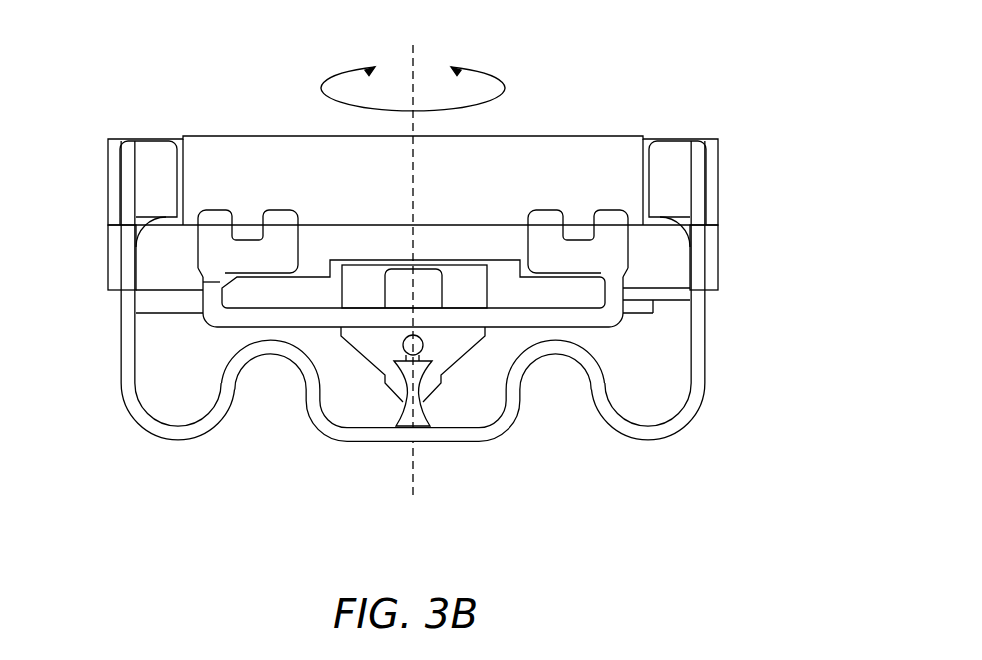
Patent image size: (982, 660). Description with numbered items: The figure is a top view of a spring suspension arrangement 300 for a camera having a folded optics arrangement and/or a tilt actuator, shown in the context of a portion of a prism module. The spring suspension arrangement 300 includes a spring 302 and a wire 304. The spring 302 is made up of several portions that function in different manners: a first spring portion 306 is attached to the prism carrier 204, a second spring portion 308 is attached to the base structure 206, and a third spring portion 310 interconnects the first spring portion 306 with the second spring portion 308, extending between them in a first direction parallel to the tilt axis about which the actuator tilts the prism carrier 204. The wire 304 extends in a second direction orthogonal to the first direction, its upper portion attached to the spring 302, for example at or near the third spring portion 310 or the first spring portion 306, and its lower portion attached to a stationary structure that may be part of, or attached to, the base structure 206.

The spring suspension arrangement 300 is at (119, 82).
The base structure 206 is at (719, 176).
The prism carrier 204 is at (716, 256).
The spring 302 is at (723, 379).
The wire 304 is at (424, 350).
The first spring portion 306 is at (229, 316).
The second spring portion 308 is at (126, 315).
The third spring portion 310 is at (407, 412).